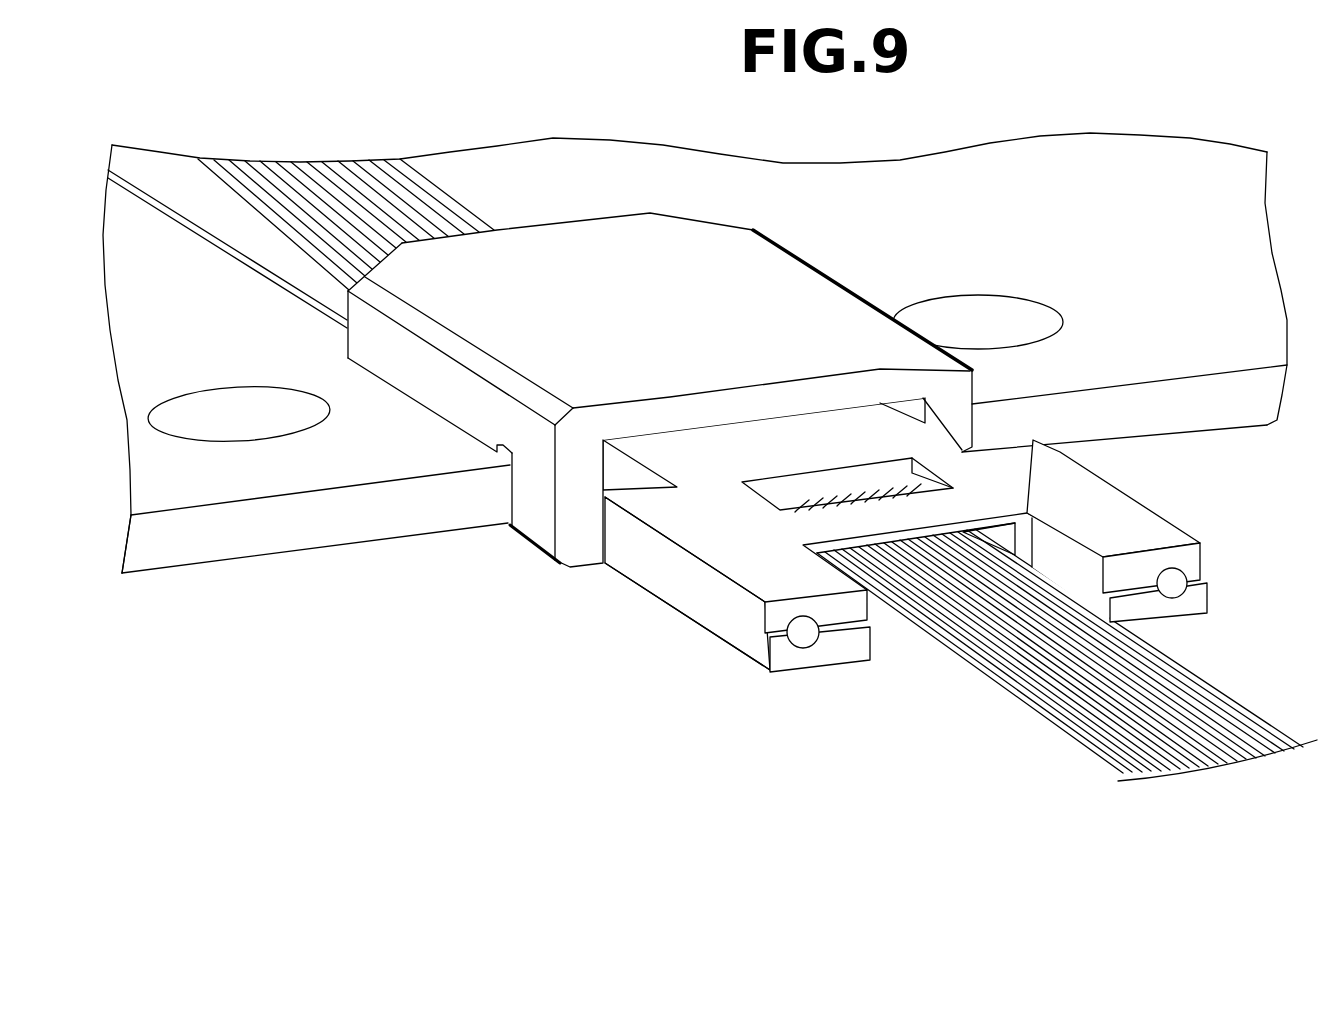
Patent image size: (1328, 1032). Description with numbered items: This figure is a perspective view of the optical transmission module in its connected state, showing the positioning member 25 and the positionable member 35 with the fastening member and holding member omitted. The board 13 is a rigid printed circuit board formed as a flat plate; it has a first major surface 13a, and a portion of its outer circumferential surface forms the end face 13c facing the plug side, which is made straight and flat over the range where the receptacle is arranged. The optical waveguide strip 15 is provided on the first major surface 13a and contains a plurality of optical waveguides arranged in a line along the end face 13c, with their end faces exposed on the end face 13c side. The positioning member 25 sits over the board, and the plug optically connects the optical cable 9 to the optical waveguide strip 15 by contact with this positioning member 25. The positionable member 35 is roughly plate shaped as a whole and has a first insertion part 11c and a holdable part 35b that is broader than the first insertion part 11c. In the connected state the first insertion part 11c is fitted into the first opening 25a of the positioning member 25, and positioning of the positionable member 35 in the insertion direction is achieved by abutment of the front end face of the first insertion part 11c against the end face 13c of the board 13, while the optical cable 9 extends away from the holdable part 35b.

The optical cable 9 is at (1213, 708).
The first insertion part 11c is at (605, 467).
The board 13 is at (695, 387).
The first major surface 13a is at (307, 478).
The end face 13c is at (397, 508).
The optical waveguide strip 15 is at (486, 185).
The positioning member 25 is at (660, 362).
The first opening 25a is at (643, 478).
The positionable member 35 is at (906, 614).
The holdable part 35b is at (680, 585).